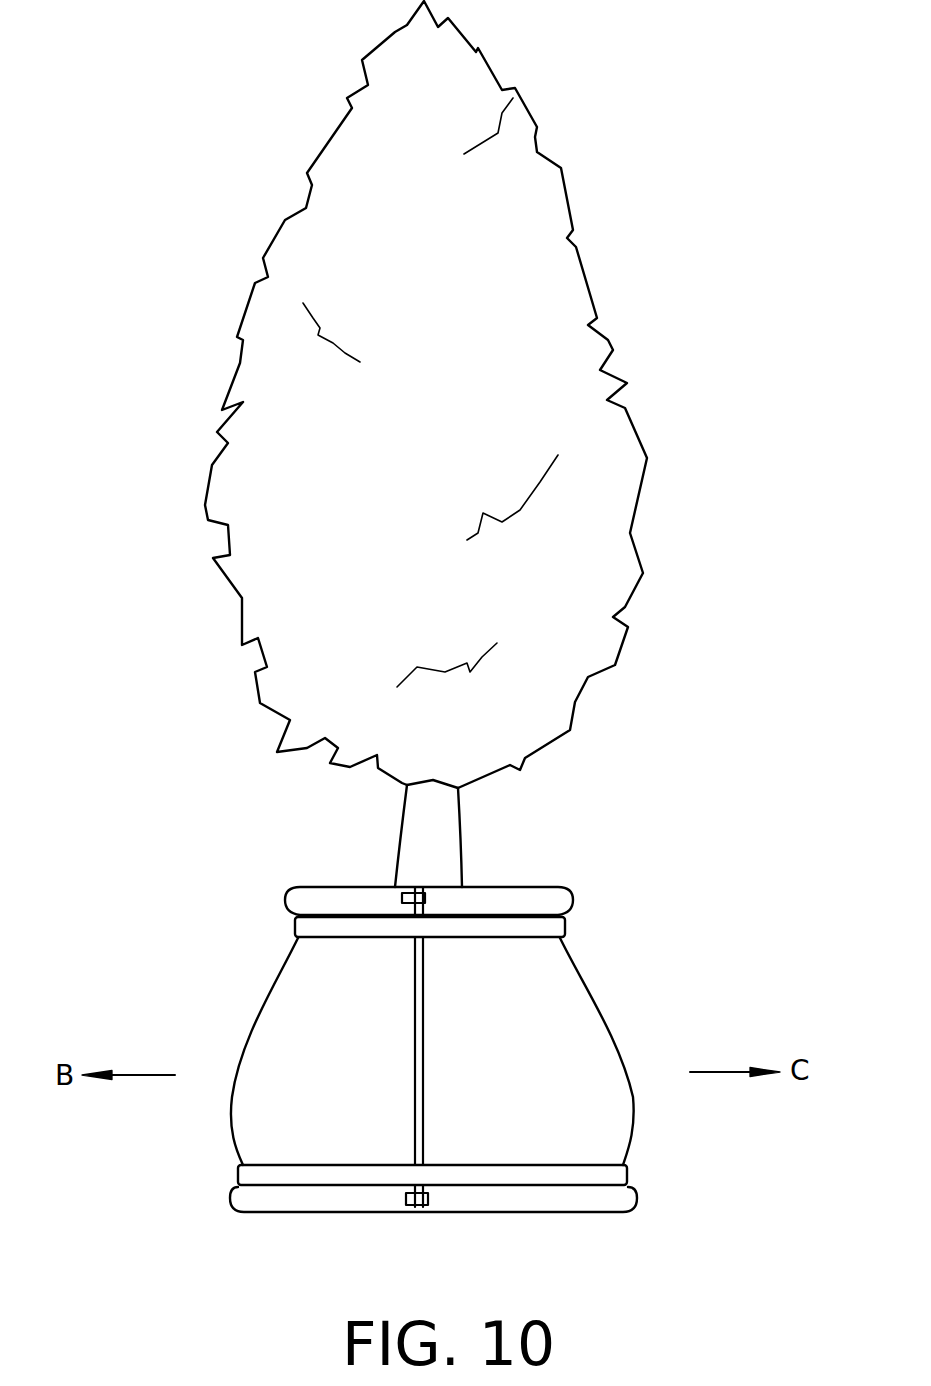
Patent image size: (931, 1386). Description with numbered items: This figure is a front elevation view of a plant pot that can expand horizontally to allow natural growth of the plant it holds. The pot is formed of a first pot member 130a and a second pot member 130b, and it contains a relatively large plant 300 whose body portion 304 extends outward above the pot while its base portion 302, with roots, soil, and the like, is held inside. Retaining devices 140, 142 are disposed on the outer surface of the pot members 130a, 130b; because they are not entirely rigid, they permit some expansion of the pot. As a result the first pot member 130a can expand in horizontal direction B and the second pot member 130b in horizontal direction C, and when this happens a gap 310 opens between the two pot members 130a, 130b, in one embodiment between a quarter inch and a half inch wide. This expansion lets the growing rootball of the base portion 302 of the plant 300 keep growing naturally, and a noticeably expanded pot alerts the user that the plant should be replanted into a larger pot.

The plant 300 is at (379, 444).
The base portion 302 is at (344, 870).
The body portion 304 is at (233, 493).
The retaining device 142 is at (553, 925).
The first pot member 130a is at (253, 1022).
The second pot member 130b is at (598, 995).
The retaining device 140 is at (612, 1172).
The gap 310 is at (422, 1138).